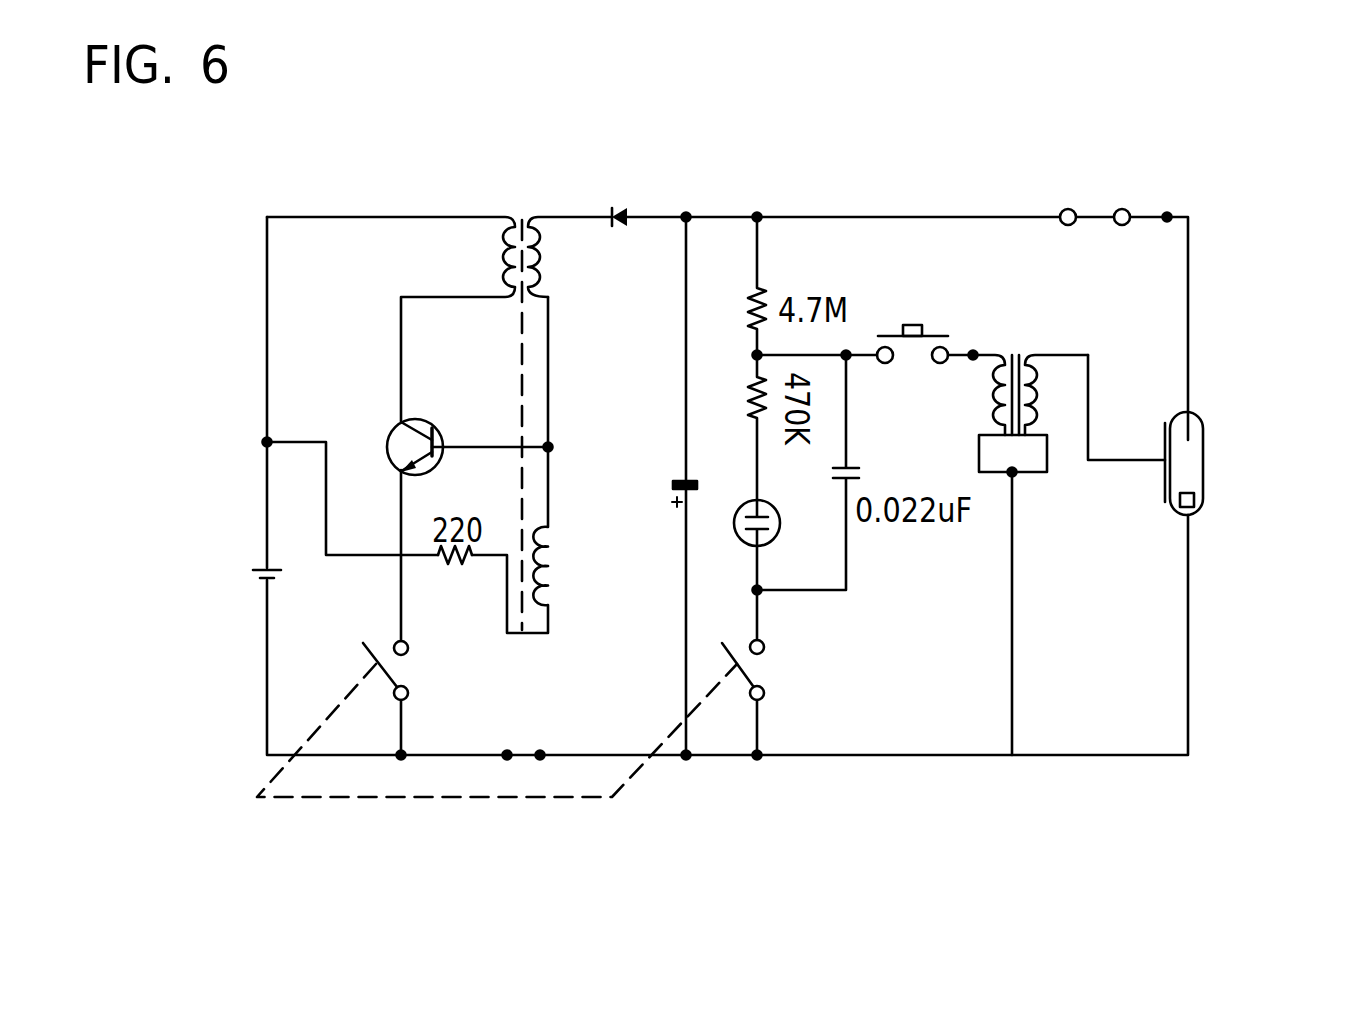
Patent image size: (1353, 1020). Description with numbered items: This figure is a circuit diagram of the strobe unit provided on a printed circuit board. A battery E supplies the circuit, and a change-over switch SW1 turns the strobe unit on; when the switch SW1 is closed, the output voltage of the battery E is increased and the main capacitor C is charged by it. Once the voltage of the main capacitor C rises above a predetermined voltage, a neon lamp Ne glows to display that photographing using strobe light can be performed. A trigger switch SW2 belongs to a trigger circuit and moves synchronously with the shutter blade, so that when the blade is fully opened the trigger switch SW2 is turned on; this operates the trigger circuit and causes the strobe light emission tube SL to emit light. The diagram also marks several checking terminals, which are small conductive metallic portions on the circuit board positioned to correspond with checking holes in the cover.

The battery E is at (247, 575).
The change-over switch SW1 is at (491, 806).
The trigger switch SW2 is at (921, 314).
The neon lamp Ne is at (773, 544).
The main capacitor C is at (631, 481).
The strobe light emission tube SL is at (1214, 462).